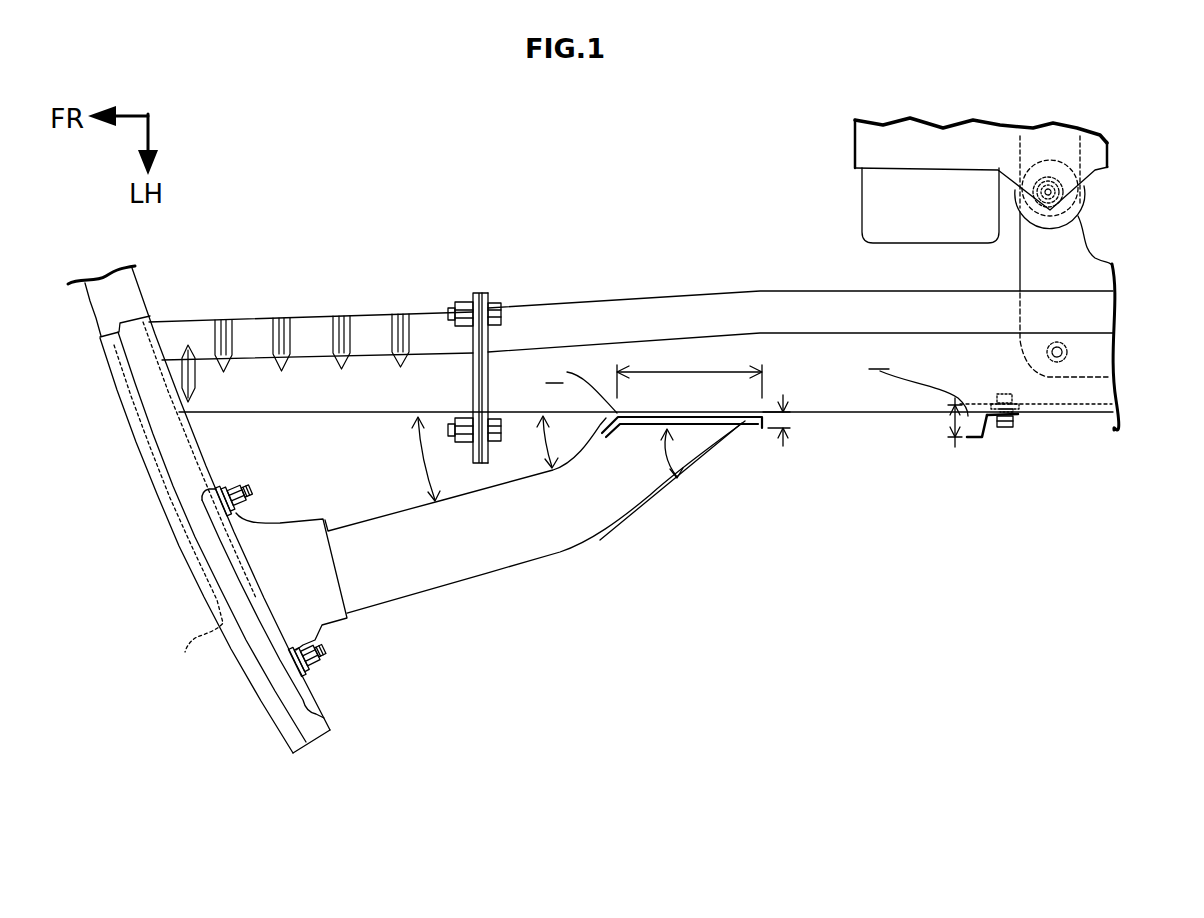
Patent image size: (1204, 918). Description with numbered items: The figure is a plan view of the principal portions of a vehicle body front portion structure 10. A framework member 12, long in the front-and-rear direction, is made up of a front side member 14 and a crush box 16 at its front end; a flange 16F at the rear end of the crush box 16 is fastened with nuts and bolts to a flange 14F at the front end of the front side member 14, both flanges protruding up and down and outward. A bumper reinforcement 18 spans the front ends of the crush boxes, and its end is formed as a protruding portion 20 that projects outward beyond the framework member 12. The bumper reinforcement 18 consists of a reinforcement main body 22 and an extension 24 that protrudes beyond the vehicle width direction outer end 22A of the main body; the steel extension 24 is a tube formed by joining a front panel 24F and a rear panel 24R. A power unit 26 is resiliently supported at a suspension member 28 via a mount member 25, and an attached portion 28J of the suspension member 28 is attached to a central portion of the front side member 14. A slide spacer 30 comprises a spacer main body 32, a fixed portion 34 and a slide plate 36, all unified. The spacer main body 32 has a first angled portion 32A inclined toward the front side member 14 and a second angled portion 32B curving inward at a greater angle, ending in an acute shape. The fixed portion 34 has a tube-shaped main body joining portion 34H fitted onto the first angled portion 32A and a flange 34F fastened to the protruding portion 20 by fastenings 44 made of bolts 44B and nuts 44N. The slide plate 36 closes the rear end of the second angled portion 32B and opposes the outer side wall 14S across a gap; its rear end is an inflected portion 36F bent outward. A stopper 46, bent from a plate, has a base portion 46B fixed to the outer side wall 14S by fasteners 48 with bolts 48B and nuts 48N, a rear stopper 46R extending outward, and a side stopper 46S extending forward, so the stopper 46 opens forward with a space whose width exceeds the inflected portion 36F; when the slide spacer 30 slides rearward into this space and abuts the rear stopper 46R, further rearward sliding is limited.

The vehicle body front portion structure 10 is at (703, 200).
The framework member 12 is at (647, 192).
The front side member 14 is at (646, 339).
The flange 14F is at (490, 294).
The outer side wall 14S is at (847, 413).
The crush box 16 is at (428, 320).
The flange 16F is at (480, 286).
The bumper reinforcement 18 is at (241, 535).
The protruding portion 20 is at (241, 535).
The reinforcement main body 22 is at (199, 476).
The vehicle width direction outer end 22A is at (168, 515).
The extension 24 is at (257, 559).
The front panel 24F is at (297, 752).
The rear panel 24R is at (330, 722).
The mount member 25 is at (1063, 233).
The power unit 26 is at (856, 185).
The suspension member 28 is at (1027, 337).
The attached portion 28J is at (1060, 362).
The slide spacer 30 is at (514, 609).
The spacer main body 32 is at (535, 539).
The first angled portion 32A is at (488, 574).
The second angled portion 32B is at (613, 517).
The fixed portion 34 is at (392, 645).
The flange 34F is at (283, 665).
The main body joining portion 34H is at (330, 584).
The slide plate 36 is at (713, 529).
The inflected portion 36F is at (797, 473).
The fastening 44 is at (346, 573).
The bolt 44B is at (256, 498).
The nut 44N is at (244, 488).
The stopper 46 is at (1020, 473).
The side stopper 46S is at (975, 430).
The rear stopper 46R is at (993, 425).
The base portion 46B is at (1023, 413).
The fastener 48 is at (962, 353).
The nut 48N is at (1013, 352).
The bolt 48B is at (997, 392).